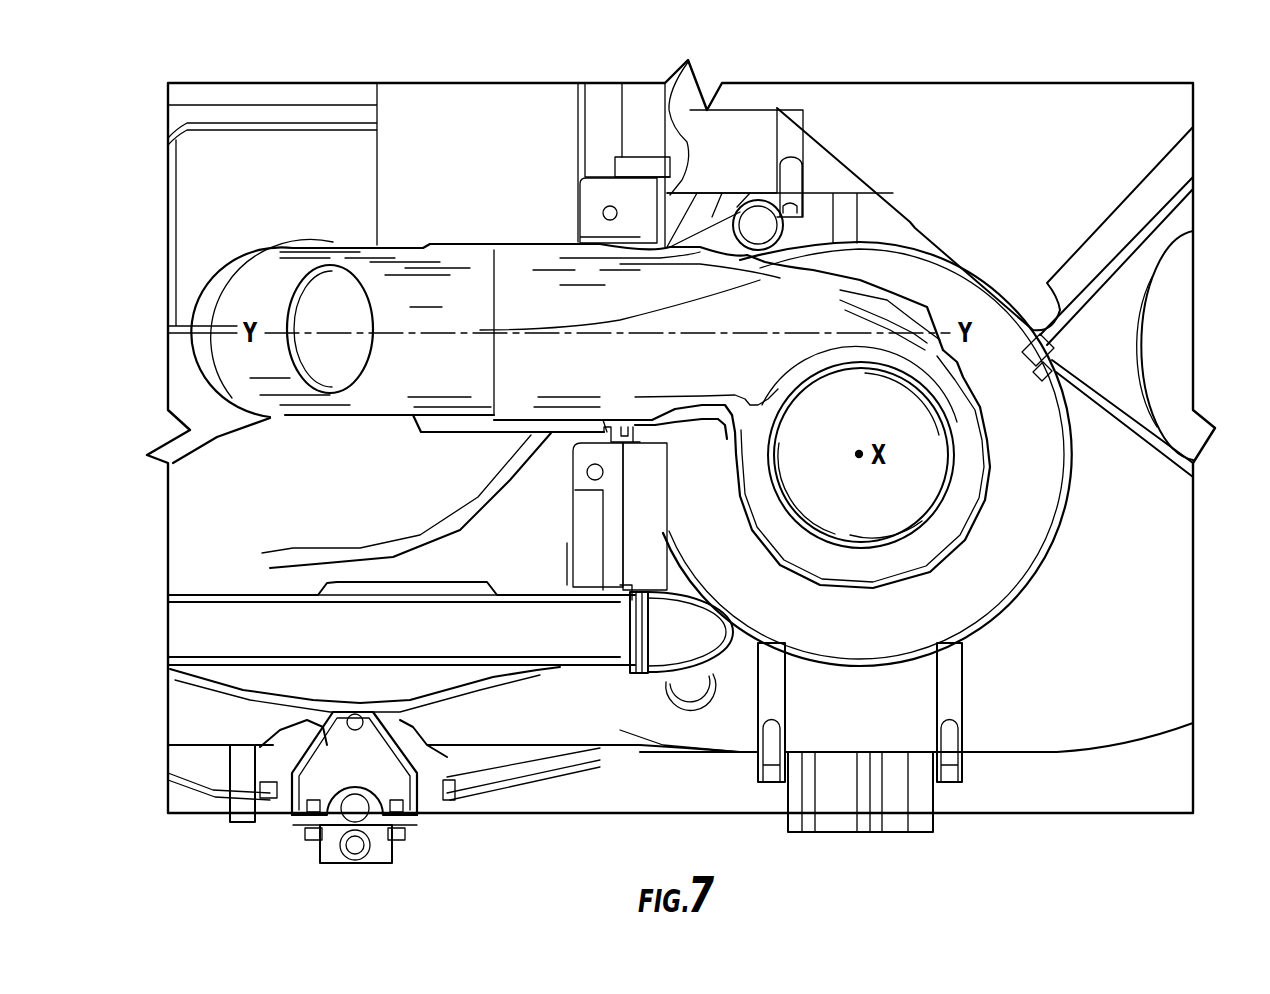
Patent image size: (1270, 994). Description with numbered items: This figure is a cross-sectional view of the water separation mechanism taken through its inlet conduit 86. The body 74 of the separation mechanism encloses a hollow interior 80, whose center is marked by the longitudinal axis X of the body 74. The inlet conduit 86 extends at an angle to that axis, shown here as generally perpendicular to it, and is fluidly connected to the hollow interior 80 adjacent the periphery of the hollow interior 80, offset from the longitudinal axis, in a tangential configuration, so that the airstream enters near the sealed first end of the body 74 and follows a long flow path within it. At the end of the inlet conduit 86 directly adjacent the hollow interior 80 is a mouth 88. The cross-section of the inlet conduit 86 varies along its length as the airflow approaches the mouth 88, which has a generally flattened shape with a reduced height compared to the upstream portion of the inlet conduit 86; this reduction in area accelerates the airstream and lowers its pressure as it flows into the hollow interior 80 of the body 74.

The body 74 is at (970, 518).
The hollow interior 80 is at (876, 560).
The inlet conduit 86 is at (553, 282).
The mouth 88 is at (727, 437).